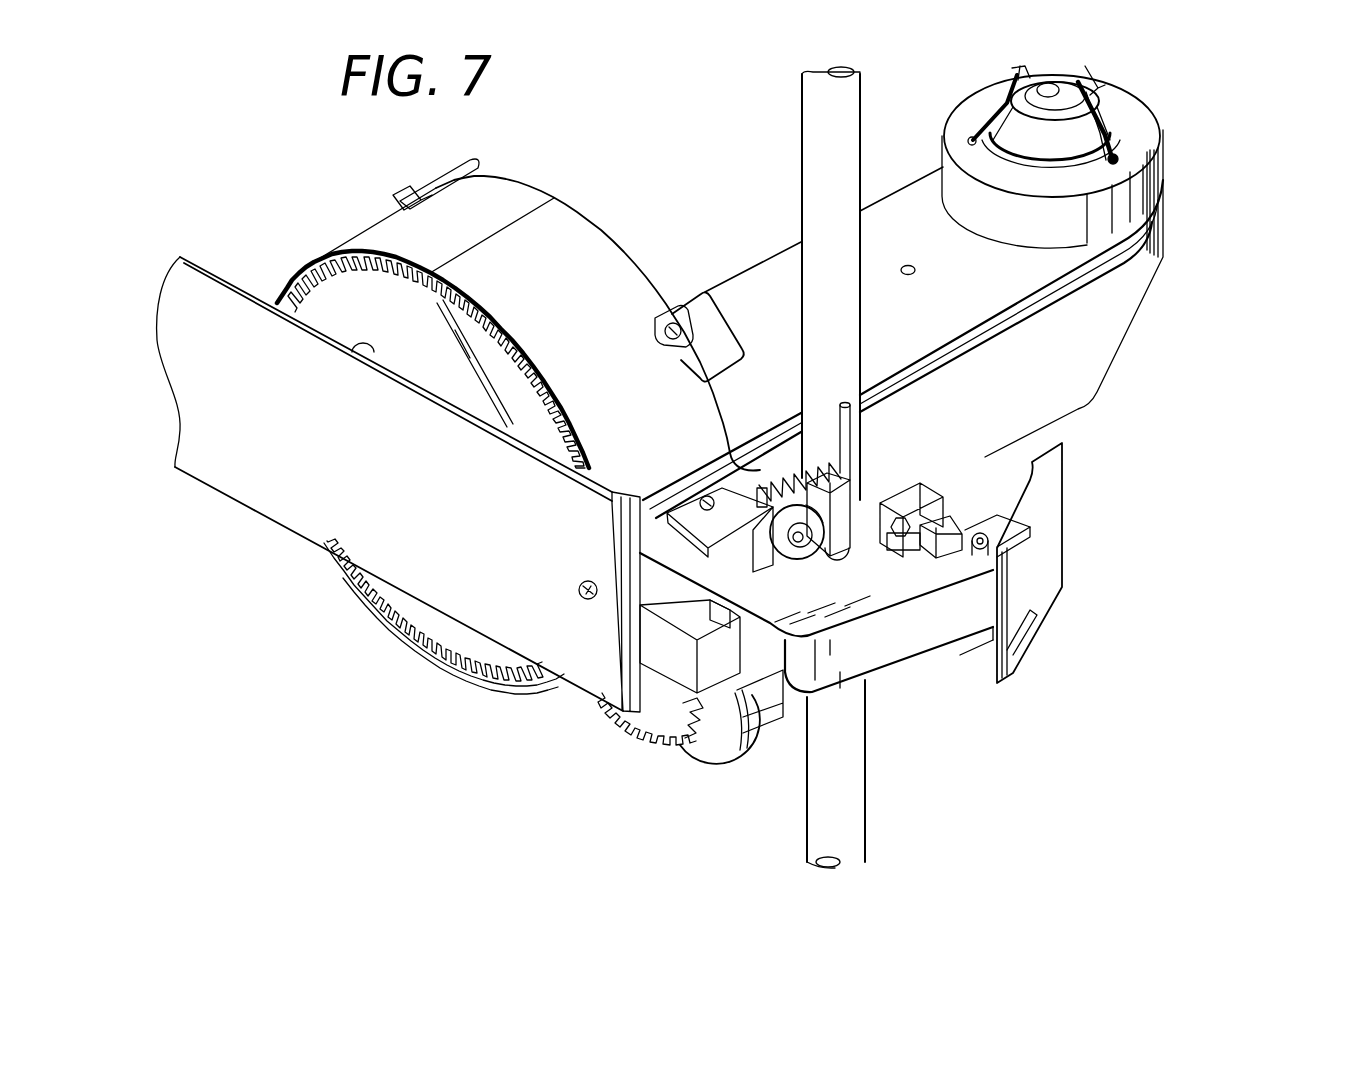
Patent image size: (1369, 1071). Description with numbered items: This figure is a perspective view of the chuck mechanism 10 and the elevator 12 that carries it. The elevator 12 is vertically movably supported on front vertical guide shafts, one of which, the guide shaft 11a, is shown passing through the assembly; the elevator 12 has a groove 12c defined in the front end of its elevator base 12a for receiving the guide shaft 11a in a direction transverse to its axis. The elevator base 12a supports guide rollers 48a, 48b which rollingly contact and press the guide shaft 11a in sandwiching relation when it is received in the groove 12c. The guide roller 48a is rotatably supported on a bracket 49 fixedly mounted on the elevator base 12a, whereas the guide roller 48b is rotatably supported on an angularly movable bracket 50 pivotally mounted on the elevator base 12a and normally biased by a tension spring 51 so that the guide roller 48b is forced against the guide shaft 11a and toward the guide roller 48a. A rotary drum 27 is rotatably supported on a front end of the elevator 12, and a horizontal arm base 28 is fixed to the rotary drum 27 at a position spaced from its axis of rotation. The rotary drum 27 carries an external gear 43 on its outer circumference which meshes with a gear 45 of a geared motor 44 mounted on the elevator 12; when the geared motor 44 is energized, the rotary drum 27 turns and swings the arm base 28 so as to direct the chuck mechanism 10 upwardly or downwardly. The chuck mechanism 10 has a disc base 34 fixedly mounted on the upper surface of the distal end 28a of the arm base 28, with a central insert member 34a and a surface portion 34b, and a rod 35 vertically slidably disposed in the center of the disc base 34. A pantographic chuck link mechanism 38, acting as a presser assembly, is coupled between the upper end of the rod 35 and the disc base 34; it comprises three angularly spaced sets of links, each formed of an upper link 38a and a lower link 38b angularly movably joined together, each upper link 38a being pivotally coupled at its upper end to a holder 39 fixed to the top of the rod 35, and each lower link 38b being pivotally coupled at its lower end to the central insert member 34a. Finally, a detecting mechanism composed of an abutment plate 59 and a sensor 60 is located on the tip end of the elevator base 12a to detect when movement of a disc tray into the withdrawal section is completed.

The chuck mechanism 10 is at (1163, 130).
The vertical guide shaft 11a is at (800, 112).
The elevator 12 is at (257, 500).
The elevator base 12a is at (917, 650).
The groove 12c is at (830, 548).
The rotary drum 27 is at (337, 318).
The horizontal arm base 28 is at (750, 303).
The distal end of the arm base 28a is at (928, 200).
The disc base 34 is at (962, 110).
The central insert member 34a is at (1050, 145).
The knob top surface 34b is at (1125, 105).
The rod 35 is at (1070, 85).
The pantographic chuck link mechanism 38 is at (1117, 130).
The upper link 38a is at (1117, 150).
The lower link 38b is at (1100, 160).
The holder 39 is at (1038, 83).
The external gear 43 is at (365, 268).
The geared motor 44 is at (717, 750).
The gear 45 is at (603, 713).
The guide roller 48a is at (787, 548).
The guide roller 48b is at (867, 490).
The bracket 49 is at (763, 543).
The angularly movable bracket 50 is at (873, 493).
The tension spring 51 is at (787, 477).
The abutment plate 59 is at (1057, 517).
The sensor 60 is at (933, 493).